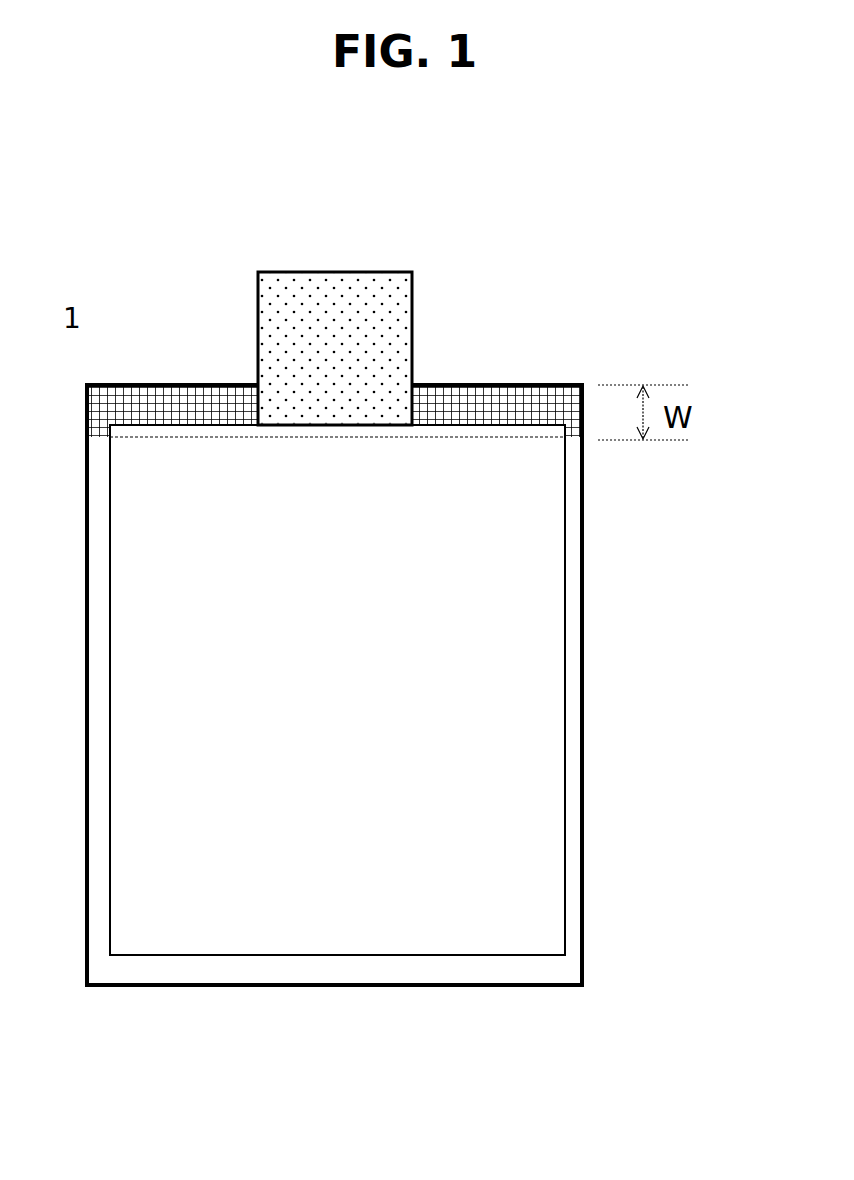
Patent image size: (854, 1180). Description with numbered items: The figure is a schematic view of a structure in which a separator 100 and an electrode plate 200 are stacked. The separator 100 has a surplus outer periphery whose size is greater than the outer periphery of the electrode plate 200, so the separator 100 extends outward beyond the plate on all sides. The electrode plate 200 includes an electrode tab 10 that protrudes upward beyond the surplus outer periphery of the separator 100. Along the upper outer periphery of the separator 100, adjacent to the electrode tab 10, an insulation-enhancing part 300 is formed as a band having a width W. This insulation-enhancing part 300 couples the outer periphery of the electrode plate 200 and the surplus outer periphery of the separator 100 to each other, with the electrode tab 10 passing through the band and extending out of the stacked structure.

The electrode tab 10 is at (411, 313).
The separator 100 is at (410, 685).
The electrode plate 200 is at (420, 690).
The insulation-enhancing part 300 is at (334, 351).